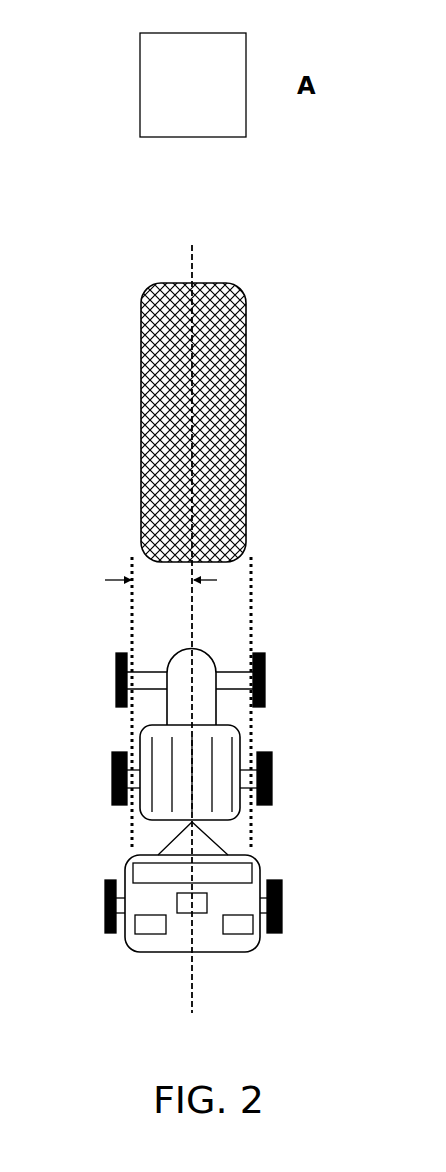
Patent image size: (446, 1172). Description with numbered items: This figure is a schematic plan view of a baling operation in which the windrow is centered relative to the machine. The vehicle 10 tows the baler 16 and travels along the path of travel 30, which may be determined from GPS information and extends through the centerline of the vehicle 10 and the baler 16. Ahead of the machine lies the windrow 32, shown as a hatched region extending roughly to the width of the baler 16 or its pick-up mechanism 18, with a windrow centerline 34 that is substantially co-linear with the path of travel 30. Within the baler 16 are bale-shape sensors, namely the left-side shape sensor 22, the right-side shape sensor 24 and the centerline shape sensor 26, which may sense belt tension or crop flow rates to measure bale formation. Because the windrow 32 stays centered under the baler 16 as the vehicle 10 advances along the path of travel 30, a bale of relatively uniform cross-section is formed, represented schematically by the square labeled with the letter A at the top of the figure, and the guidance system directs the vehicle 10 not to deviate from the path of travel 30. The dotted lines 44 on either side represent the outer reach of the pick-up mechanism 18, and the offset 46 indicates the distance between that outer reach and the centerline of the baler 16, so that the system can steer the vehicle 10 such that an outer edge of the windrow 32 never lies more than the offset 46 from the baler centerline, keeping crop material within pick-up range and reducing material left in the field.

The vehicle 10 is at (240, 740).
The baler 16 is at (262, 940).
The pick-up mechanism 18 is at (258, 870).
The left-side shape sensor 22 is at (152, 934).
The right-side shape sensor 24 is at (237, 934).
The centerline shape sensor 26 is at (188, 913).
The path of travel 30 is at (193, 628).
The windrow 32 is at (246, 476).
The windrow centerline 34 is at (246, 318).
The lines 44 is at (132, 638).
The offset 46 is at (146, 580).